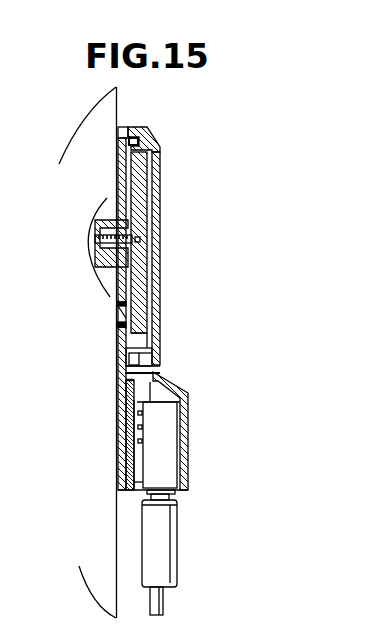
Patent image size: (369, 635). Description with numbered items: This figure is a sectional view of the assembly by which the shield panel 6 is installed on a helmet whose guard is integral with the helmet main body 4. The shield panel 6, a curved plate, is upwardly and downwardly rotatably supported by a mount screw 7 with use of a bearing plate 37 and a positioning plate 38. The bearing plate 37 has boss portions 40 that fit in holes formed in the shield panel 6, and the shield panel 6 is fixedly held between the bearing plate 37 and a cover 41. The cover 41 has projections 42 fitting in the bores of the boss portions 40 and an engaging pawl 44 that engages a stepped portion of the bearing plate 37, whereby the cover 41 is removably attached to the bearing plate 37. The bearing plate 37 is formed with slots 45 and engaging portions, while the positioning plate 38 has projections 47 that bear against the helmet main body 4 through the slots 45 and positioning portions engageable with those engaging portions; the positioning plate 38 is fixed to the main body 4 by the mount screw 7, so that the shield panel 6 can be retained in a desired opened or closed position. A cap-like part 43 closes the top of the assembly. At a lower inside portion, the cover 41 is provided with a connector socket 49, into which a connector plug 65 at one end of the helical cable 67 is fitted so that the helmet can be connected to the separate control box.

The helmet main body 4 is at (86, 136).
The shield panel 6 is at (118, 462).
The mount screw 7 is at (140, 236).
The bearing plate 37 is at (118, 377).
The positioning plate 38 is at (141, 190).
The boss portions 40 is at (130, 405).
The cover 41 is at (160, 295).
The projections 42 is at (142, 364).
The cap 43 is at (148, 143).
The engaging pawl 44 is at (123, 131).
The slots 45 is at (117, 313).
The projections 47 is at (117, 328).
The connector socket 49 is at (168, 460).
The connector plug 65 is at (167, 548).
The helical cable 67 is at (163, 598).